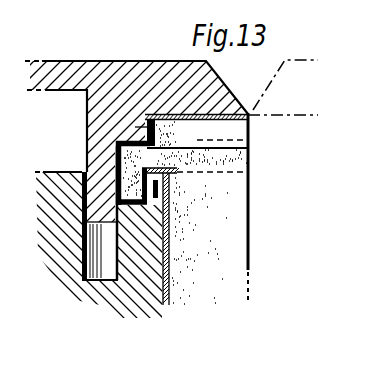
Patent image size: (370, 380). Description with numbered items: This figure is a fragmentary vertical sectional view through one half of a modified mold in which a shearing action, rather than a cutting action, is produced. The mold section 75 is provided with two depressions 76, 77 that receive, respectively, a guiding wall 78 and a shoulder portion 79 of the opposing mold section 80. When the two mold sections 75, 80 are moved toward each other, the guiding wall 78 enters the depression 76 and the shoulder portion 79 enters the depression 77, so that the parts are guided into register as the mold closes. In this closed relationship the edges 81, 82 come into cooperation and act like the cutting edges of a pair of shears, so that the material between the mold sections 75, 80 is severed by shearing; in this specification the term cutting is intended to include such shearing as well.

The mold section 80 is at (153, 80).
The shoulder portion 79 is at (191, 131).
The depression 77 is at (115, 163).
The edge 81 is at (168, 150).
The edge 82 is at (178, 203).
The mold section 75 is at (155, 279).
The guiding wall 78 is at (102, 250).
The depression 76 is at (103, 270).